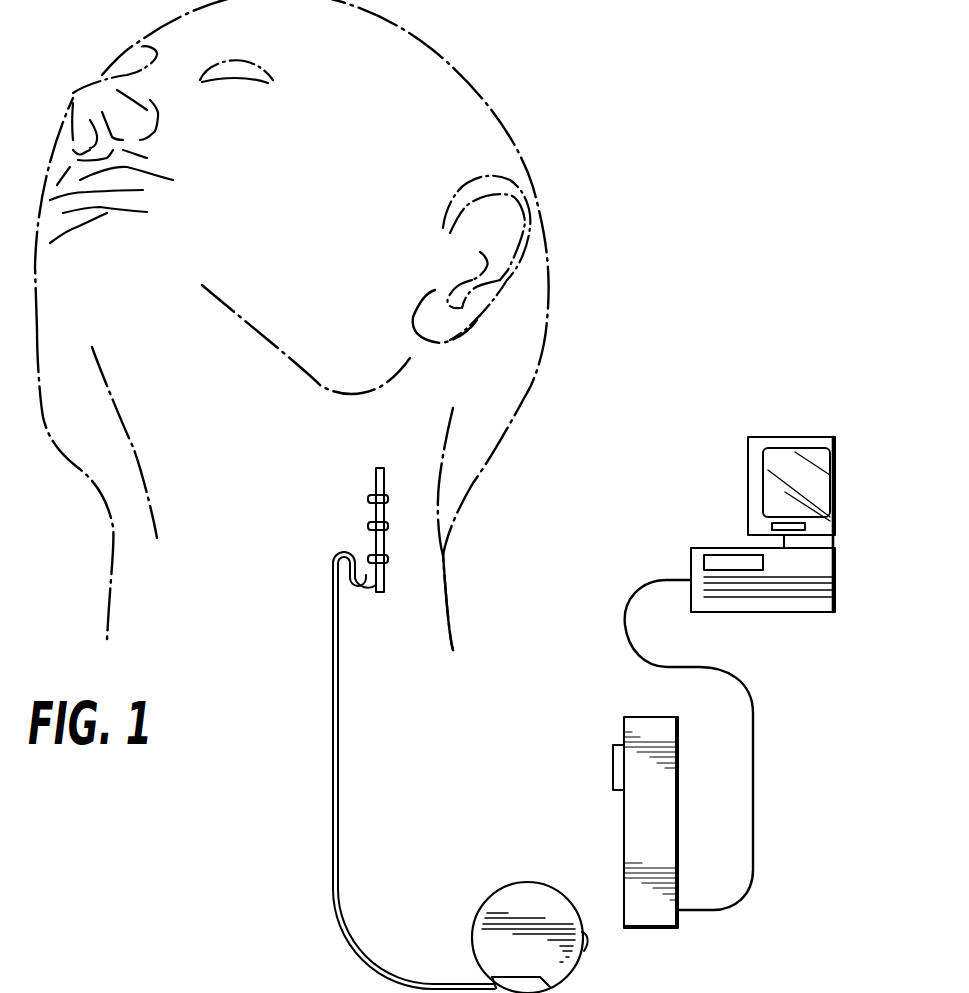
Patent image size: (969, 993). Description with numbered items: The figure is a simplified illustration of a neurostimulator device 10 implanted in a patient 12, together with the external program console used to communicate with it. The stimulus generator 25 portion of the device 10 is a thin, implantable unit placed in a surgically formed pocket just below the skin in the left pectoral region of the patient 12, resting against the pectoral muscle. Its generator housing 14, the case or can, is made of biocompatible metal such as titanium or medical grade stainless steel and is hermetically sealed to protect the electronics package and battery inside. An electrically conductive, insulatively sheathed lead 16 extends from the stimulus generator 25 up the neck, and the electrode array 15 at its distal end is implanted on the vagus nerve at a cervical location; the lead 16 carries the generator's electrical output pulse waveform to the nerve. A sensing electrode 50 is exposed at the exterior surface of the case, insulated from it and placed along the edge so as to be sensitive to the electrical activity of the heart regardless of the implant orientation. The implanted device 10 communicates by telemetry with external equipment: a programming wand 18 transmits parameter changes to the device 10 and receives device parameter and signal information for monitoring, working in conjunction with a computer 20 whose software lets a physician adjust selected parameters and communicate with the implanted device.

The neurostimulator device 10 is at (455, 922).
The patient 12 is at (446, 578).
The generator housing 14 is at (503, 883).
The electrode array 15 is at (359, 523).
The lead 16 is at (333, 713).
The programming wand 18 is at (624, 724).
The computer 20 is at (783, 612).
The stimulus generator 25 is at (545, 918).
The sensing electrode 50 is at (586, 950).